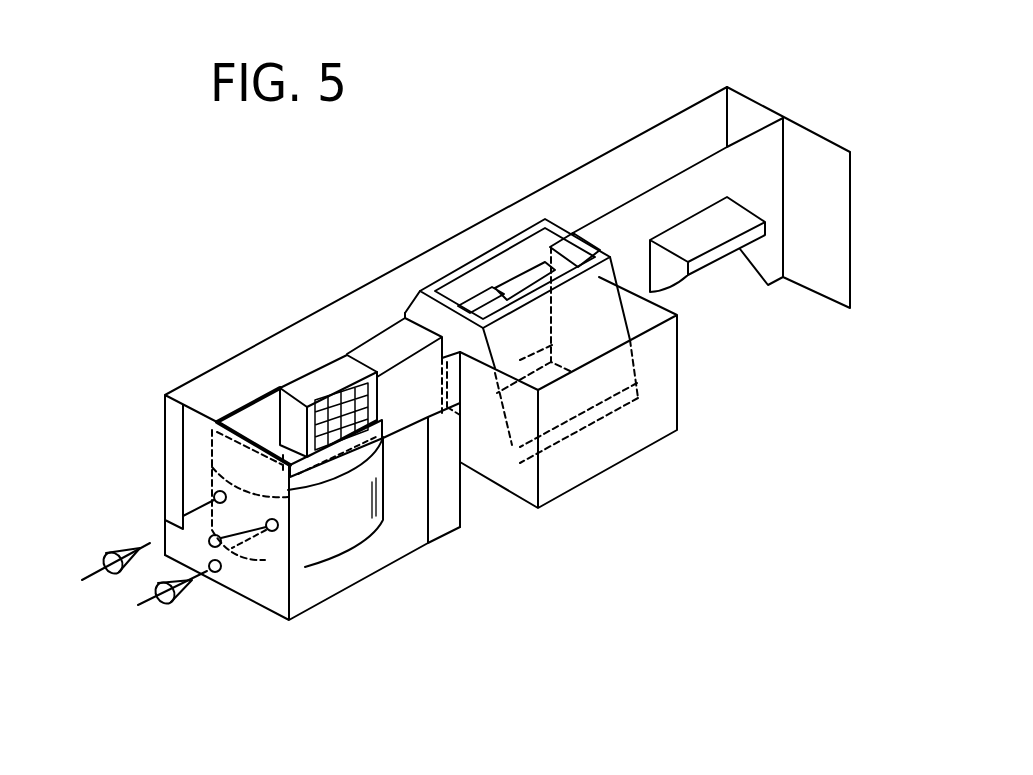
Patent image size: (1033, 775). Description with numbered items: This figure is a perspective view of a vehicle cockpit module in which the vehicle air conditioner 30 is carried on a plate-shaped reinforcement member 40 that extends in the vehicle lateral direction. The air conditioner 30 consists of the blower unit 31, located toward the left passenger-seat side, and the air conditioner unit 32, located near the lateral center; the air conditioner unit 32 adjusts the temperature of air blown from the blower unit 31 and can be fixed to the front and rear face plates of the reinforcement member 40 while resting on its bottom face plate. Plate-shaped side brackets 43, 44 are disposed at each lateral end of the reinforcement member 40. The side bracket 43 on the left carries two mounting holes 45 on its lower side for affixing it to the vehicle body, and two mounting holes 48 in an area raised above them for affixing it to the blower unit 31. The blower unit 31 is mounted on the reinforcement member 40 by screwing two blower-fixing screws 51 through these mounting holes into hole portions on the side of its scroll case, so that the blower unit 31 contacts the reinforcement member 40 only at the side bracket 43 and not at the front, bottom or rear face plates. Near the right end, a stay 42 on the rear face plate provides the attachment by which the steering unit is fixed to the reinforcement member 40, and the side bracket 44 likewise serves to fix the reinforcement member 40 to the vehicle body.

The vehicle air conditioner 30 is at (360, 323).
The blower unit 31 is at (284, 366).
The air conditioner unit 32 is at (495, 237).
The reinforcement member 40 is at (643, 113).
The stay 42 is at (715, 253).
The side bracket 43 is at (272, 596).
The side bracket 44 is at (807, 128).
The mounting holes 45 is at (176, 525).
The mounting holes 48 is at (213, 494).
The blower-fixing screws 51 is at (108, 583).